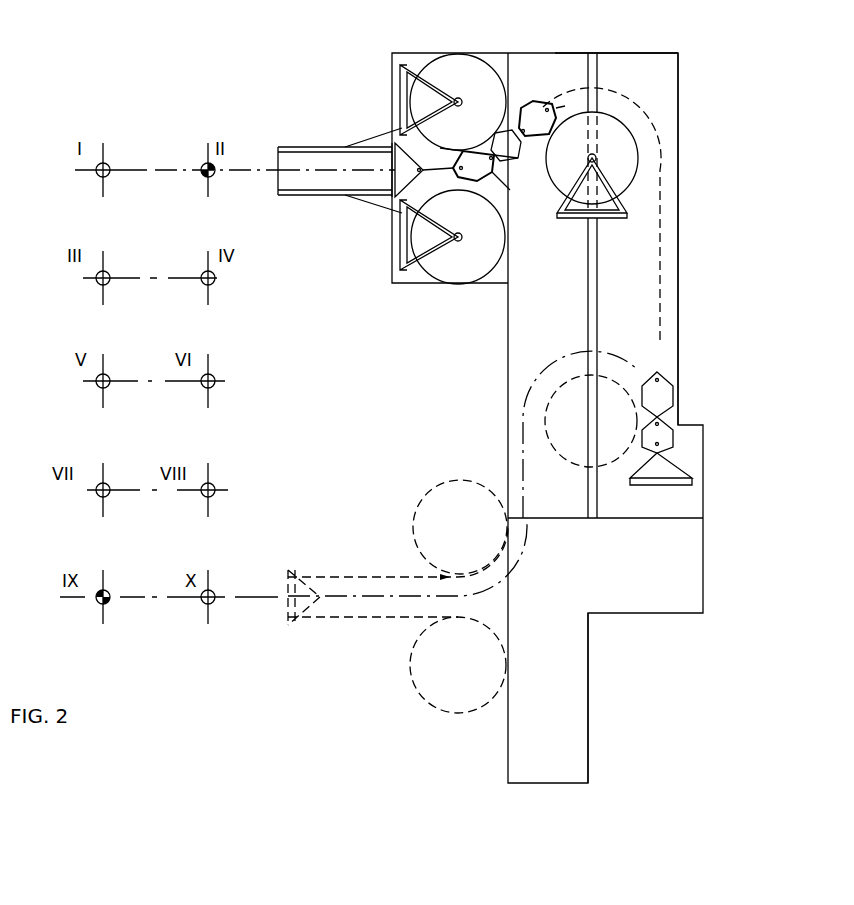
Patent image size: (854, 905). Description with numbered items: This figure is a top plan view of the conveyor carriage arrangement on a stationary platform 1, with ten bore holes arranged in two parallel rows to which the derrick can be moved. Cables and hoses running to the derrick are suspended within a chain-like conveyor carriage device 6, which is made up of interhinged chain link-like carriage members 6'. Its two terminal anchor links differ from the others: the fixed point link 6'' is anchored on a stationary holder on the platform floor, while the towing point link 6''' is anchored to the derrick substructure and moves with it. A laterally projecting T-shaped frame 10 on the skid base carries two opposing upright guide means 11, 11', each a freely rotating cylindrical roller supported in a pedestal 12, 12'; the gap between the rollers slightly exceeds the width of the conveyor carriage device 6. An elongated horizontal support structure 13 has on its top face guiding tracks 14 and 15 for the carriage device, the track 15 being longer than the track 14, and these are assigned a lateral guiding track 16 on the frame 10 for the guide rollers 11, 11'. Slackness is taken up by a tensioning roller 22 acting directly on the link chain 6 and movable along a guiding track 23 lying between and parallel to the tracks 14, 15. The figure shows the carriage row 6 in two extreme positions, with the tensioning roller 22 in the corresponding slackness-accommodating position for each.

The stationary platform 1 is at (634, 712).
The chain-like conveyor carriage device 6 is at (627, 299).
The chain link-like carriage members 6' is at (577, 277).
The fixed point link 6'' is at (687, 469).
The towing point link 6''' is at (347, 384).
The T-shaped frame 10 is at (427, 58).
The guide means 11 is at (433, 468).
The guide means 11' is at (429, 295).
The pedestal 12 is at (420, 268).
The pedestal 12' is at (410, 76).
The support structure 13 is at (697, 249).
The guiding track 14 is at (663, 88).
The guiding track 15 is at (568, 68).
The guiding track 16 is at (302, 160).
The tensioning roller 22 is at (623, 163).
The guiding track 23 is at (597, 257).